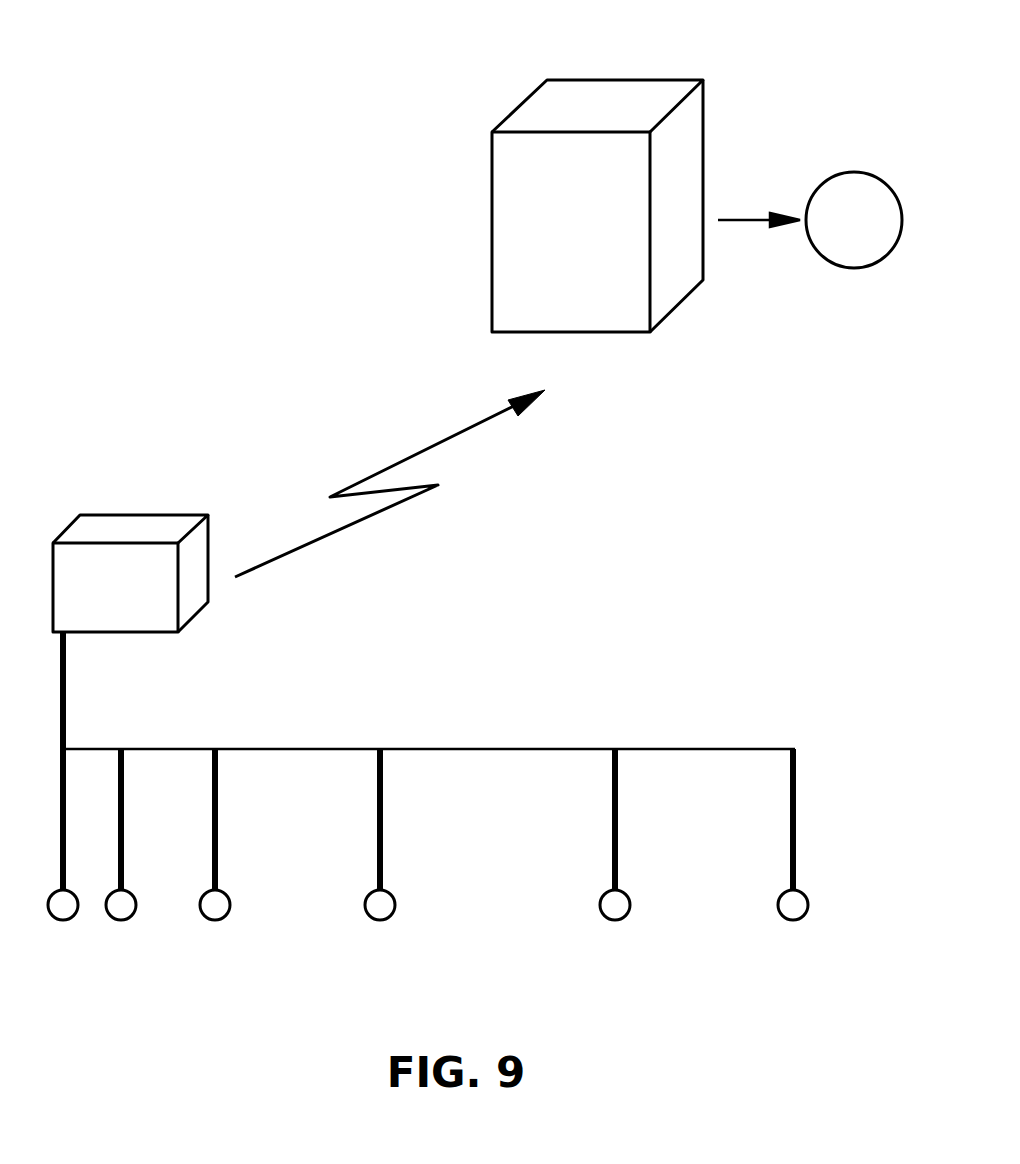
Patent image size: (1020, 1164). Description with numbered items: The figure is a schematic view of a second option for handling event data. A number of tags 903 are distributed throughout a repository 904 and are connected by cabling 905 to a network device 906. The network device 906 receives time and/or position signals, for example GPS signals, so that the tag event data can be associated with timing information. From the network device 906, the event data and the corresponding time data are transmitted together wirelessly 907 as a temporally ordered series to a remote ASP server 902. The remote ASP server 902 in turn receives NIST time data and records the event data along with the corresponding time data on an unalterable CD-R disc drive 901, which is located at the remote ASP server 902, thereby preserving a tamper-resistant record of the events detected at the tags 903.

The unalterable CD-R disc drive 901 is at (852, 172).
The remote ASP server 902 is at (492, 233).
The tags 903 is at (205, 917).
The repository 904 is at (311, 38).
The cabling 905 is at (332, 748).
The network device 906 is at (145, 512).
The wireless transmission 907 is at (460, 432).